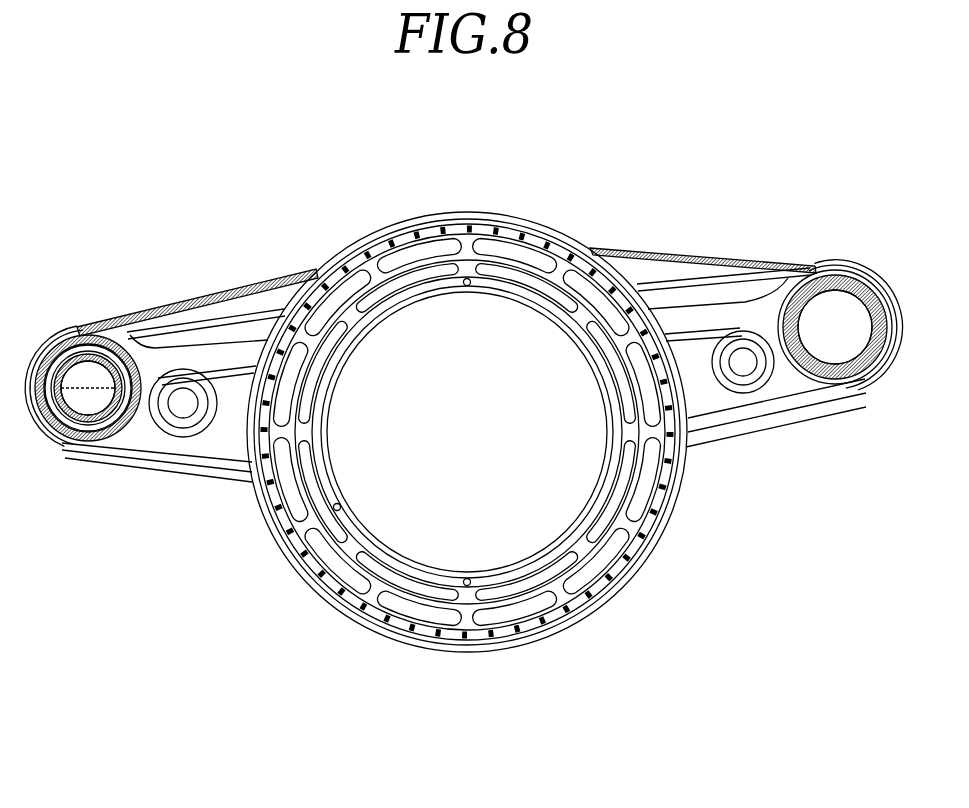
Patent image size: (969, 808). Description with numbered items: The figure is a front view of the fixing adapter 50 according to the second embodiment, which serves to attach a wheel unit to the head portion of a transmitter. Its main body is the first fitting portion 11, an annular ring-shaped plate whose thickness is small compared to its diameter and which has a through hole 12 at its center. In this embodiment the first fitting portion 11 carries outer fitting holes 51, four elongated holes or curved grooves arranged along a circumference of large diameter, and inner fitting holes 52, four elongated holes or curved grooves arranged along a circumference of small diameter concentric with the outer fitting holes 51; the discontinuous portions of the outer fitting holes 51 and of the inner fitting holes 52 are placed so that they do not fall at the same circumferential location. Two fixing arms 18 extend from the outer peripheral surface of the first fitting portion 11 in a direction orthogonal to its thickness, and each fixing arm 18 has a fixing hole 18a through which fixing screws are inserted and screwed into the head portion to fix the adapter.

The fixing adapter 50 is at (566, 186).
The first fitting portion 11 is at (449, 212).
The through hole 12 is at (457, 406).
The fixing arm 18 is at (177, 300).
The fixing hole 18a is at (184, 407).
The outer fitting hole 51 is at (528, 617).
The inner fitting hole 52 is at (550, 568).